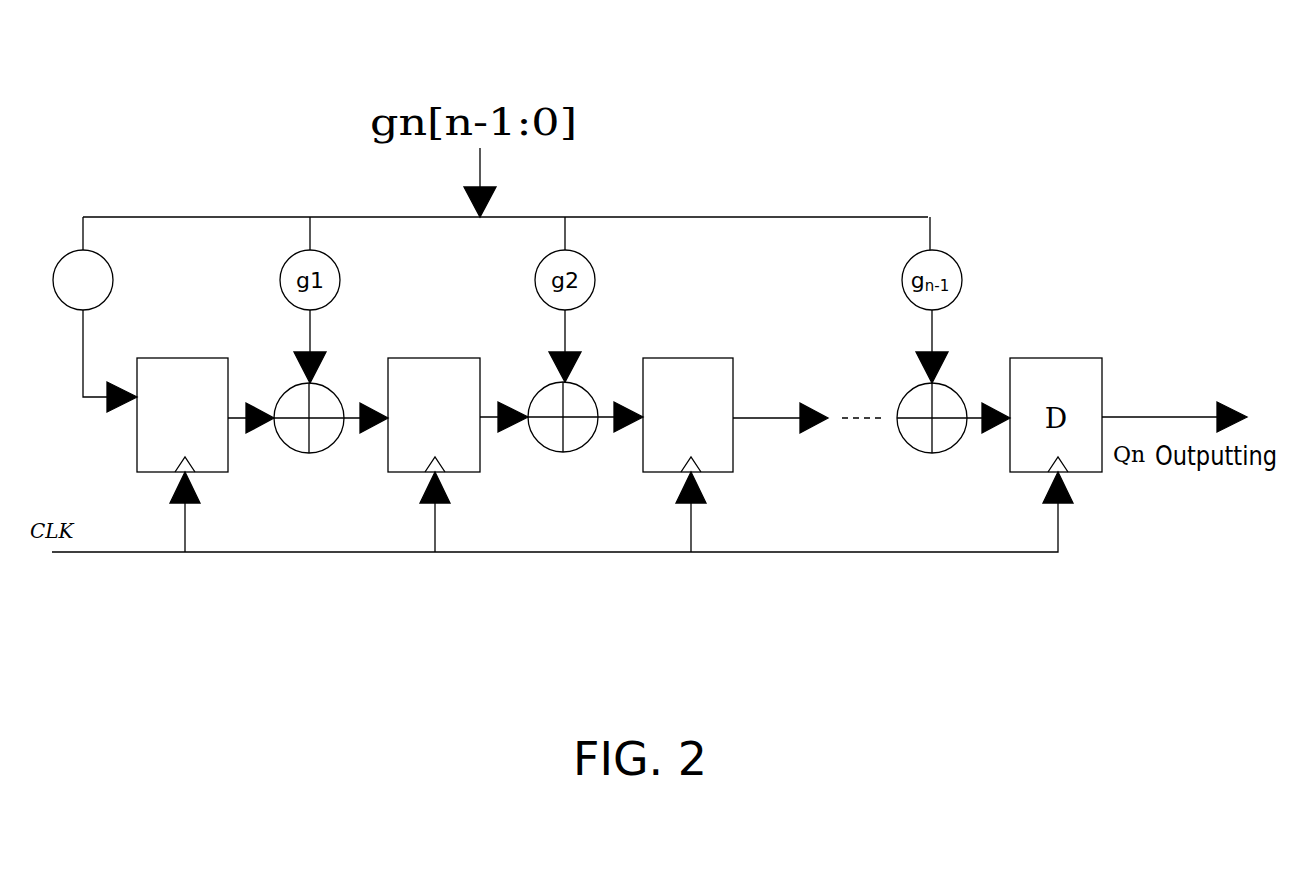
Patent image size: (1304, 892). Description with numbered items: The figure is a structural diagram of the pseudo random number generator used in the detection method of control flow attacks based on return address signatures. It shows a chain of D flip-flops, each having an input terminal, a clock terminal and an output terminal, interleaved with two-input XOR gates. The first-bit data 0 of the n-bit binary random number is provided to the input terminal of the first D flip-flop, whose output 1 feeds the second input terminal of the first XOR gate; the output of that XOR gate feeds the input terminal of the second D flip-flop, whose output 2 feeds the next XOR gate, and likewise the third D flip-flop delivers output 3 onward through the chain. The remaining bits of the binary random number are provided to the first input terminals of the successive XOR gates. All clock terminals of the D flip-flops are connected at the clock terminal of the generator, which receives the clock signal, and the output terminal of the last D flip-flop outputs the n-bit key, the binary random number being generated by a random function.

The coefficient g0 input 0 is at (95, 331).
The first D flip-flop (output Q1) 1 is at (205, 416).
The second D flip-flop (output Q2) 2 is at (456, 415).
The third D flip-flop (output Q3) 3 is at (711, 415).